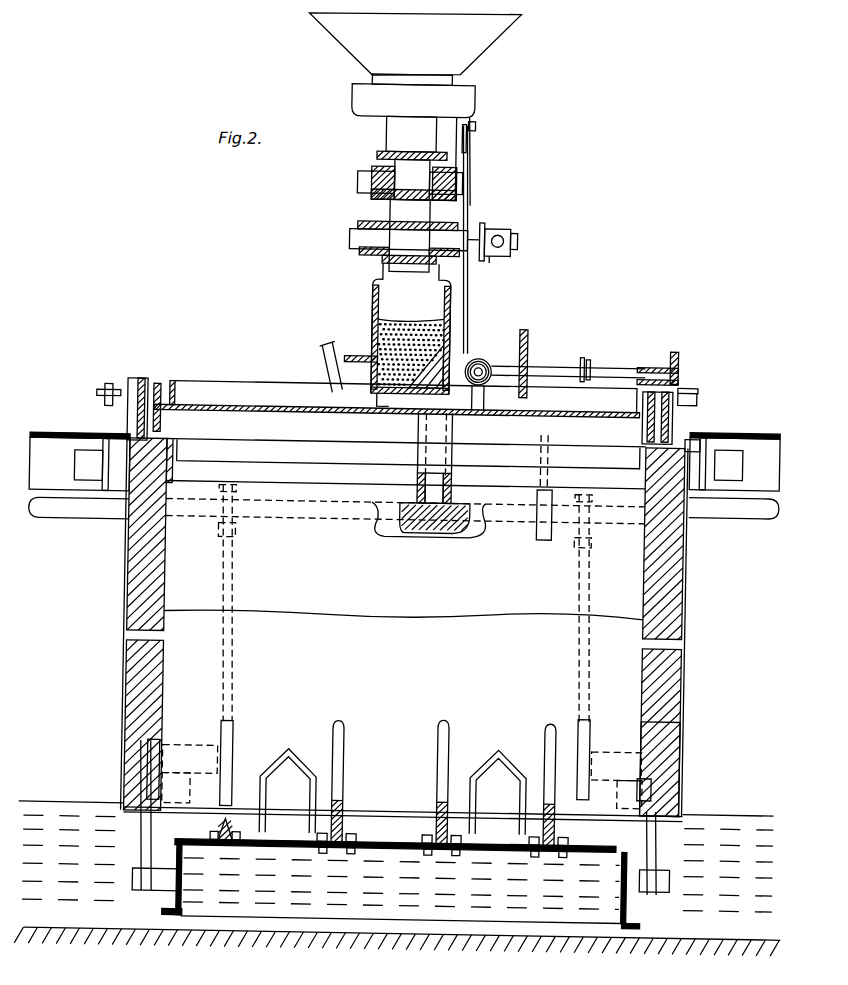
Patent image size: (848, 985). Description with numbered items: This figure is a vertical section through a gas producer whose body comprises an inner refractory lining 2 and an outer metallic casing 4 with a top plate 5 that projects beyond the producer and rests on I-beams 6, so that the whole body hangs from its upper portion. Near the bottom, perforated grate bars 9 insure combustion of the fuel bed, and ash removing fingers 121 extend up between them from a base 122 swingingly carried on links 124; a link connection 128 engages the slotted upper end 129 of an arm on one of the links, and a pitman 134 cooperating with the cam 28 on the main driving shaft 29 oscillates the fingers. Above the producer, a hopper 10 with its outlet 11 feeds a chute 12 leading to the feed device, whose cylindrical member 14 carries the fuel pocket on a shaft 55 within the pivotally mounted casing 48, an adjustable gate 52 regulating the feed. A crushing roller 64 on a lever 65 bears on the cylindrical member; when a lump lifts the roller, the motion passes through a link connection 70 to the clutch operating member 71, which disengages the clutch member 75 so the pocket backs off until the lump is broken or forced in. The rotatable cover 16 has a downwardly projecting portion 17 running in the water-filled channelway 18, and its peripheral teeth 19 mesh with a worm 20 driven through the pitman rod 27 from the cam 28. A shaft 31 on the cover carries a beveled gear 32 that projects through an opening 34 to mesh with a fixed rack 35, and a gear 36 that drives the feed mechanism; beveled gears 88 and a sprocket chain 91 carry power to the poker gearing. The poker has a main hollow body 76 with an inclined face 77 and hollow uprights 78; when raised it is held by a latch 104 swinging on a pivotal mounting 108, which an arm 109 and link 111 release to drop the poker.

The inner refractory lining 2 is at (686, 576).
The outer metallic casing 4 is at (687, 598).
The top plate 5 is at (697, 443).
The I-beams 6 is at (741, 440).
The perforated grate bars 9 is at (291, 747).
The hopper 10 is at (414, 44).
The outlet 11 is at (436, 83).
The chute 12 is at (420, 158).
The cylindrical member 14 is at (408, 236).
The cover 16 is at (156, 385).
The downwardly projecting portion 17 is at (162, 424).
The channelway 18 is at (129, 412).
The teeth 19 is at (113, 385).
The worm 20 is at (719, 832).
The pitman rod 27 is at (549, 460).
The cam 28 is at (223, 529).
The main driving shaft 29 is at (323, 519).
The shaft 31 is at (562, 371).
The beveled gear 32 is at (672, 348).
The opening 34 is at (676, 384).
The rack 35 is at (695, 397).
The gear 36 is at (530, 355).
The casing 48 is at (369, 290).
The adjustable gate 52 is at (375, 312).
The shaft 55 is at (351, 242).
The crushing roller 64 is at (414, 175).
The lever 65 is at (372, 165).
The link connection 70 is at (488, 254).
The clutch operating member 71 is at (513, 238).
The clutch member 75 is at (508, 225).
The main hollow body 76 is at (429, 533).
The inclined face 77 is at (481, 519).
The hollow upright 78 is at (452, 474).
The beveled gears 88 is at (482, 349).
The sprocket chain 91 is at (585, 364).
The latch 104 is at (452, 161).
The pivotal mounting 108 is at (468, 124).
The arm 109 is at (462, 137).
The link 111 is at (464, 292).
The ash removing fingers 121 is at (346, 734).
The base 122 is at (309, 853).
The links 124 is at (153, 855).
The link connection 128 is at (643, 795).
The slotted upper end 129 is at (688, 749).
The pitman 134 is at (234, 703).